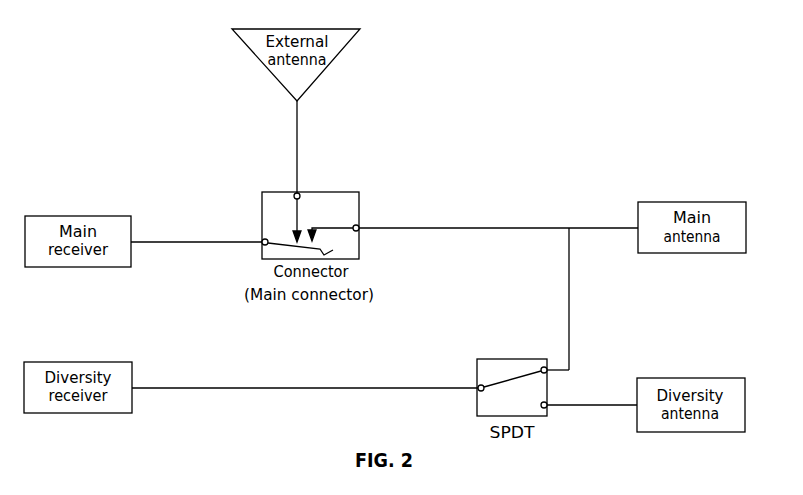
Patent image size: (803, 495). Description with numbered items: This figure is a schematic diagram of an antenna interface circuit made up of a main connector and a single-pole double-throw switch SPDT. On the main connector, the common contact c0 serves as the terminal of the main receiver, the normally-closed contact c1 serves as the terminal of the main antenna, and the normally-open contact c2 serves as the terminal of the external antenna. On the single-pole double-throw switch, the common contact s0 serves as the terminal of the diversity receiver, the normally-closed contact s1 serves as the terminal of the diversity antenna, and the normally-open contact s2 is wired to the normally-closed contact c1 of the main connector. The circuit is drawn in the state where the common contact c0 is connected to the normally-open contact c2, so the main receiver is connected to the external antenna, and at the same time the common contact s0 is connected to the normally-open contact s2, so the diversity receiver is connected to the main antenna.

The common contact of the main connector c0 is at (252, 234).
The normally-closed contact of the main connector c1 is at (368, 221).
The normally-open contact of the main connector c2 is at (307, 187).
The common contact of the single-pole double-throw switch s0 is at (469, 382).
The normally-closed contact of the single-pole double-throw switch s1 is at (554, 399).
The normally-open contact of the single-pole double-throw switch s2 is at (554, 363).